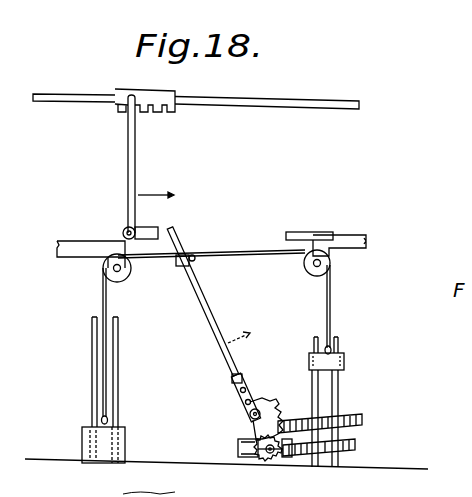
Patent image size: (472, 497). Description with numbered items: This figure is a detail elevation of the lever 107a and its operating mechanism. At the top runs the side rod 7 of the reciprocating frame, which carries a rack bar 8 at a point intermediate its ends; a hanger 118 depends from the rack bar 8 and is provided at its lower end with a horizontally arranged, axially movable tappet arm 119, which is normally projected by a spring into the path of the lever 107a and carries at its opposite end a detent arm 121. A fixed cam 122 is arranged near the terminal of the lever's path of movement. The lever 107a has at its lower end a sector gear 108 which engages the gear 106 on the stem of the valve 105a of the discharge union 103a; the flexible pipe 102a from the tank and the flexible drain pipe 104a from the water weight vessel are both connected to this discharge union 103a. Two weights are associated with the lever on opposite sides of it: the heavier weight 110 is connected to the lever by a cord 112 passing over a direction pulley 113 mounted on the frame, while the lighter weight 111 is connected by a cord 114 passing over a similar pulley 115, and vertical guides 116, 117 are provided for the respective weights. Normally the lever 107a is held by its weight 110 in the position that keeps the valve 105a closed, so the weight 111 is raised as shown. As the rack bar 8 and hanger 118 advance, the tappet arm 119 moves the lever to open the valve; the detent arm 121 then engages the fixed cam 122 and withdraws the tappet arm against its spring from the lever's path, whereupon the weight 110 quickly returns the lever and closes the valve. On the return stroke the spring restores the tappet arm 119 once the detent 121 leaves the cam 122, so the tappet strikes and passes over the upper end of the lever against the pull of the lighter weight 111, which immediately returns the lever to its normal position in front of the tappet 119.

The side rod 7 is at (244, 98).
The rack bar 8 is at (157, 97).
The hanger 118 is at (137, 157).
The tappet arm 119 is at (124, 230).
The detent arm 121 is at (152, 228).
The direction pulley 113 is at (123, 283).
The cord 112 is at (152, 262).
The vertical guide 116 is at (121, 386).
The weight 110 is at (126, 442).
The fixed cam 122 is at (293, 232).
The pulley 115 is at (332, 262).
The cord 114 is at (331, 292).
The weight 111 is at (345, 364).
The vertical guide 117 is at (340, 392).
The lever 107a is at (198, 282).
The sector gear 108 is at (272, 408).
The flexible drain pipe 104a is at (363, 420).
The flexible pipe 102a is at (352, 445).
The gear 106 is at (278, 455).
The discharge union 103a is at (246, 443).
The valve 105a is at (257, 450).